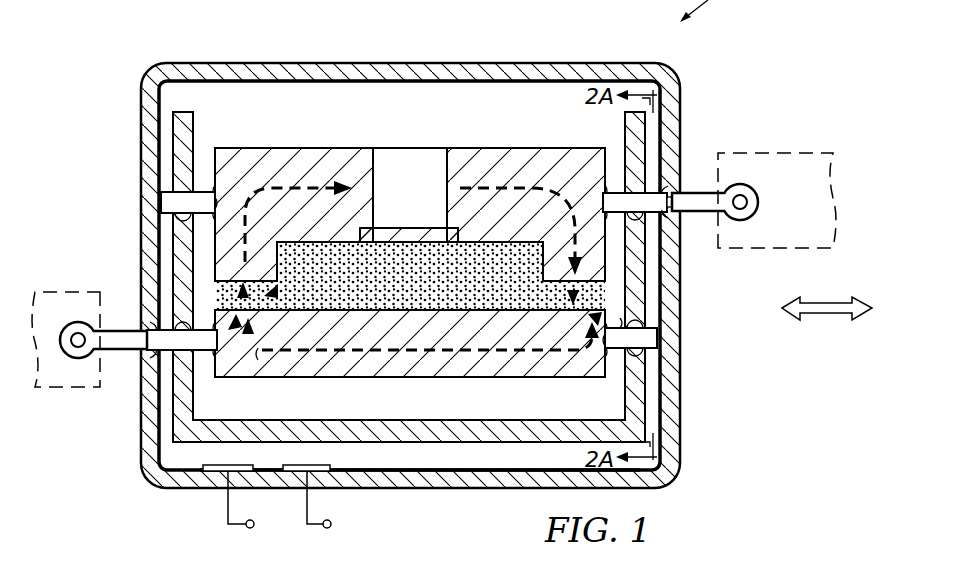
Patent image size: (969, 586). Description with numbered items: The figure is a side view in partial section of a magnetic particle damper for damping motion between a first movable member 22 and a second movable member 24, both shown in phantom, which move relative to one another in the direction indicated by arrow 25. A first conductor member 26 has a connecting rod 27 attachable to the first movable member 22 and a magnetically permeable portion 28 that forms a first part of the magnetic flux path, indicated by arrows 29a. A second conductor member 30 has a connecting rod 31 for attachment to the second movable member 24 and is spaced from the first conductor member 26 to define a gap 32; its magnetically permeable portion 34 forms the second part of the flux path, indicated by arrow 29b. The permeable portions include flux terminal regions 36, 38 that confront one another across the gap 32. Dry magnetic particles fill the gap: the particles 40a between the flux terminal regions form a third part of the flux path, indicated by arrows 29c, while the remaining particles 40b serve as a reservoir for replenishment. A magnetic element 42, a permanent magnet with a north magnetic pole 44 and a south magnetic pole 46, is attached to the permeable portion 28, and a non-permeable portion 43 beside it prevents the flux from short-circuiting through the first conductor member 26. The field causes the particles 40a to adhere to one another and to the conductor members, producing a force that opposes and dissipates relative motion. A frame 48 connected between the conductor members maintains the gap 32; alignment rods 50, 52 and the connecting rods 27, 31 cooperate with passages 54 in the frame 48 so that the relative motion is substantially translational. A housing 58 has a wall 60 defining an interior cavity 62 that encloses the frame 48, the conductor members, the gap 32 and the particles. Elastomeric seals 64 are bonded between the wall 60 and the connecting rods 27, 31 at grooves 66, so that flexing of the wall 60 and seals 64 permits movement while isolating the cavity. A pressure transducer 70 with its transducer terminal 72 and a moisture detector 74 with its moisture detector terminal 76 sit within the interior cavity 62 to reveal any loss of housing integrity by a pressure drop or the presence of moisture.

The first movable member 22 is at (792, 152).
The second movable member 24 is at (45, 392).
The arrow 25 is at (830, 318).
The first conductor member 26 is at (563, 147).
The connecting rod 27 is at (712, 185).
The magnetically permeable portion 28 is at (257, 175).
The first part of magnetic flux path 29a is at (300, 186).
The second part of magnetic flux path 29b is at (404, 352).
The third part of magnetic flux path 29c is at (250, 292).
The second conductor member 30 is at (350, 377).
The connecting rod 31 is at (112, 355).
The gap 32 is at (212, 300).
The magnetically permeable portion 34 is at (500, 366).
The flux terminal region 36 is at (210, 262).
The flux terminal region 38 is at (260, 350).
The magnetic particles 40a is at (268, 288).
The magnetic particles 40b is at (436, 287).
The magnetic element 42 is at (403, 148).
The non-permeable portion 43 is at (378, 240).
The north magnetic pole 44 is at (436, 150).
The south magnetic pole 46 is at (385, 168).
The frame 48 is at (498, 472).
The alignment rod 50 is at (165, 200).
The alignment rod 52 is at (650, 335).
The passages 54 is at (180, 210).
The housing 58 is at (431, 58).
The wall 60 is at (218, 62).
The interior cavity 62 is at (553, 92).
The elastomeric seal 64 is at (150, 322).
The groove 66 is at (135, 352).
The pressure transducer 70 is at (212, 462).
The transducer terminal 72 is at (250, 530).
The moisture detector 74 is at (312, 462).
The moisture detector terminal 76 is at (327, 530).